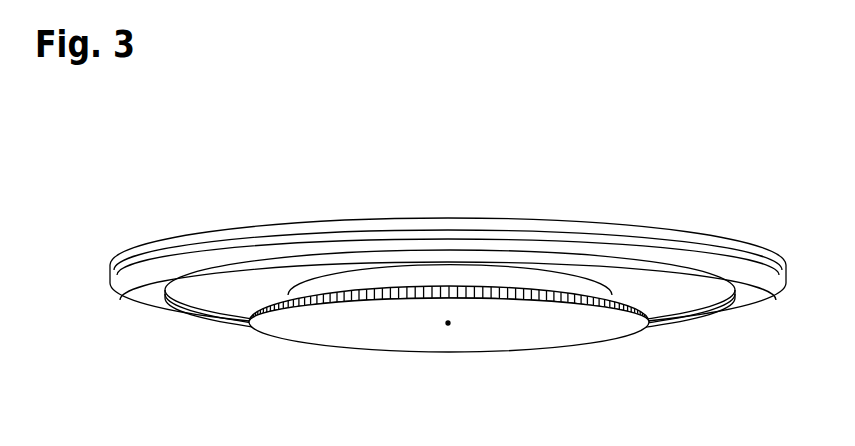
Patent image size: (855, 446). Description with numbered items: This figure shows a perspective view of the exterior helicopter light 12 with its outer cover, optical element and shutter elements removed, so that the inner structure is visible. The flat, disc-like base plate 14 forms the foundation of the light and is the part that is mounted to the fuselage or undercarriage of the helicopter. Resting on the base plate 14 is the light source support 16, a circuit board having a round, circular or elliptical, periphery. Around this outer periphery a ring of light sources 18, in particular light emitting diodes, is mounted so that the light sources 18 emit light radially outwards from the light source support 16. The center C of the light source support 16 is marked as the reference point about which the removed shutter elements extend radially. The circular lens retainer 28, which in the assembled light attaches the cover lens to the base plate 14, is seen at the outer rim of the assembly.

The exterior helicopter light 12 is at (688, 186).
The base plate 14 is at (522, 275).
The light source support 16 is at (346, 323).
The light sources 18 is at (362, 287).
The circular lens retainer 28 is at (750, 297).
The center of the light source support C is at (448, 327).